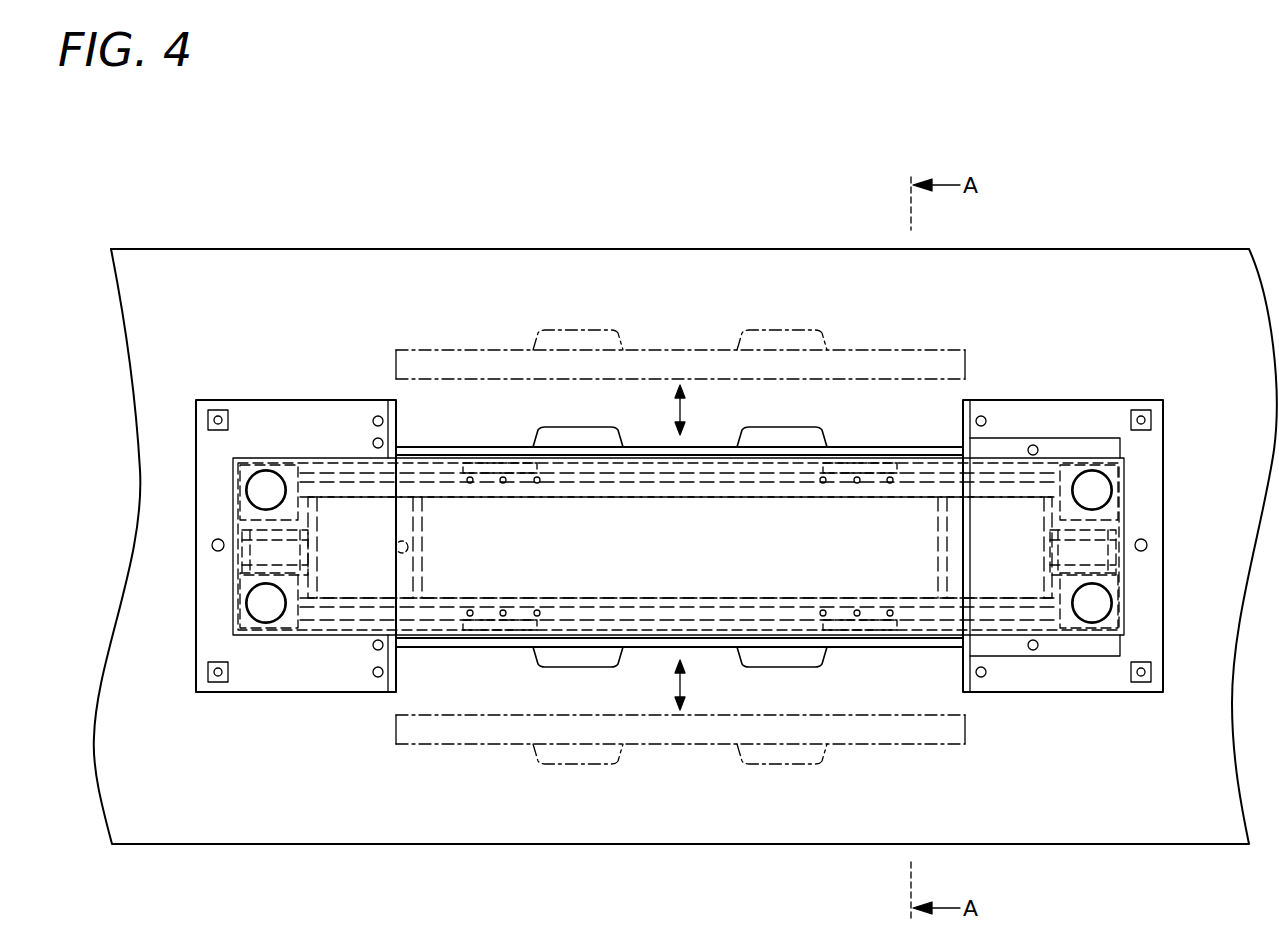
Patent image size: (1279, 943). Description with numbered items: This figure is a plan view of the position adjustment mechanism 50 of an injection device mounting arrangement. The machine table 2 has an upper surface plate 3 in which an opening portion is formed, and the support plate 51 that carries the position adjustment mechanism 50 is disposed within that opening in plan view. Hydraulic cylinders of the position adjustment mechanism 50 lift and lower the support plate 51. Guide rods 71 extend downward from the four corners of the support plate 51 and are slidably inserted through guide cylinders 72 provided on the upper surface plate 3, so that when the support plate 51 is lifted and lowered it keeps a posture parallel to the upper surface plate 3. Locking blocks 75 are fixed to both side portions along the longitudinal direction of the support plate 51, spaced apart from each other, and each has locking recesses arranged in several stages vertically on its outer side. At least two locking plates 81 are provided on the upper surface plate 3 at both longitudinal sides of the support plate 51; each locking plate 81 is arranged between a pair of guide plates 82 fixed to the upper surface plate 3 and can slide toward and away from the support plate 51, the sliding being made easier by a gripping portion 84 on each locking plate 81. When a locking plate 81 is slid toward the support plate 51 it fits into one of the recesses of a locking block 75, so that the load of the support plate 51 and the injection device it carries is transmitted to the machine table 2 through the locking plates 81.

The machine table 2 is at (1134, 249).
The upper surface plate 3 is at (1074, 278).
The position adjustment mechanism 50 is at (817, 303).
The support plate 51 is at (713, 465).
The guide rod 71 is at (268, 490).
The guide cylinder 72 is at (248, 490).
The locking block 75 is at (510, 468).
The locking plate 81 is at (455, 350).
The guide plate 82 is at (396, 680).
The gripping portion 84 is at (805, 325).